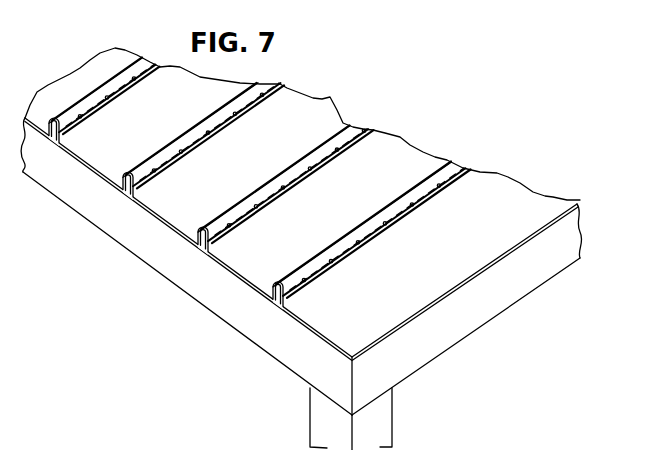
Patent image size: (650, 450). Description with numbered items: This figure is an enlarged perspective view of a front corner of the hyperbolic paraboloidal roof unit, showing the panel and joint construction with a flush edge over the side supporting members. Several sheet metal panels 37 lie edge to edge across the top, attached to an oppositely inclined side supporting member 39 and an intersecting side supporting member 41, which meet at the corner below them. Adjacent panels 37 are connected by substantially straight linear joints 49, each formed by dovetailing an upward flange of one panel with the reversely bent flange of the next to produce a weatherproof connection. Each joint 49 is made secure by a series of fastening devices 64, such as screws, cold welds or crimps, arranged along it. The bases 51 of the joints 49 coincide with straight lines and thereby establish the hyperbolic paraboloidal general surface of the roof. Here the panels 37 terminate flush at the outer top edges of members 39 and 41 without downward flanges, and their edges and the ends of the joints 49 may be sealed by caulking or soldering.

The sheet metal panel 37 is at (318, 109).
The side supporting member 39 is at (432, 350).
The side supporting member 41 is at (241, 325).
The joint 49 is at (413, 200).
The base of joint 51 is at (127, 196).
The fastening device 64 is at (196, 141).